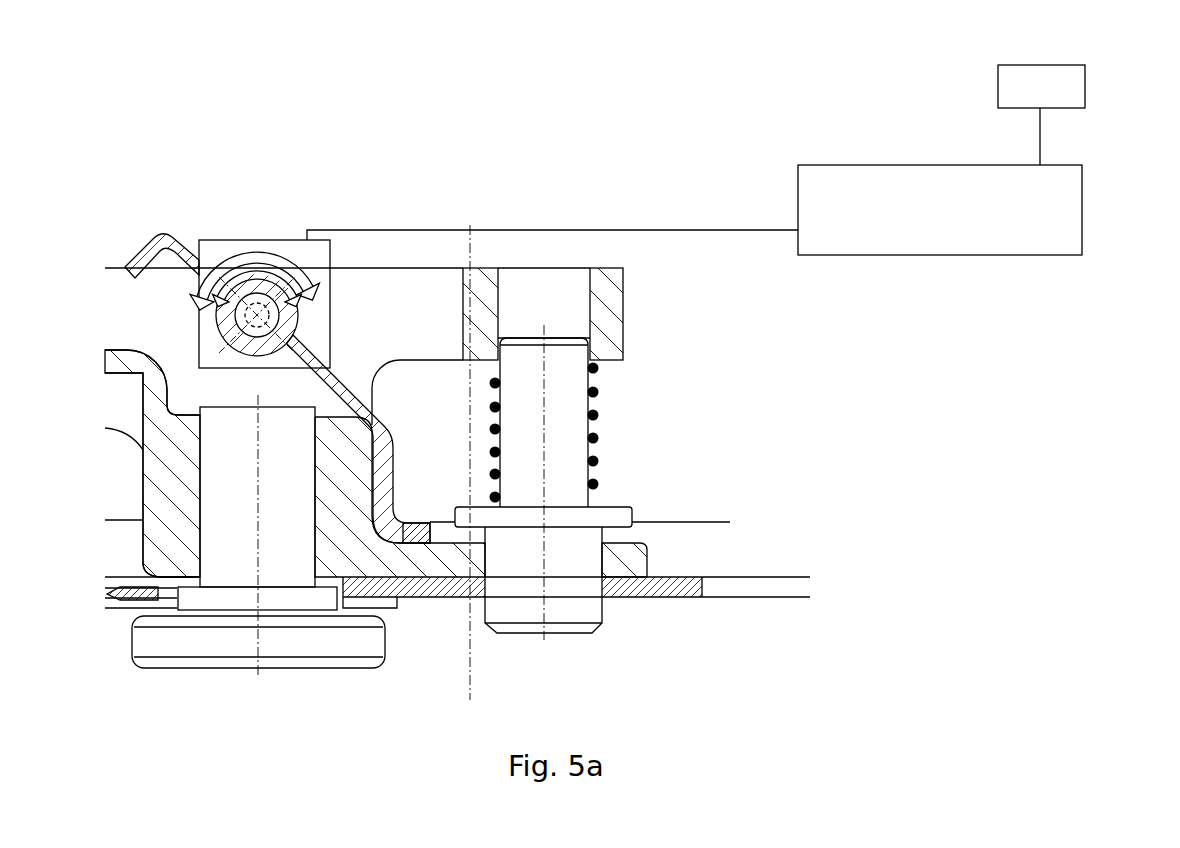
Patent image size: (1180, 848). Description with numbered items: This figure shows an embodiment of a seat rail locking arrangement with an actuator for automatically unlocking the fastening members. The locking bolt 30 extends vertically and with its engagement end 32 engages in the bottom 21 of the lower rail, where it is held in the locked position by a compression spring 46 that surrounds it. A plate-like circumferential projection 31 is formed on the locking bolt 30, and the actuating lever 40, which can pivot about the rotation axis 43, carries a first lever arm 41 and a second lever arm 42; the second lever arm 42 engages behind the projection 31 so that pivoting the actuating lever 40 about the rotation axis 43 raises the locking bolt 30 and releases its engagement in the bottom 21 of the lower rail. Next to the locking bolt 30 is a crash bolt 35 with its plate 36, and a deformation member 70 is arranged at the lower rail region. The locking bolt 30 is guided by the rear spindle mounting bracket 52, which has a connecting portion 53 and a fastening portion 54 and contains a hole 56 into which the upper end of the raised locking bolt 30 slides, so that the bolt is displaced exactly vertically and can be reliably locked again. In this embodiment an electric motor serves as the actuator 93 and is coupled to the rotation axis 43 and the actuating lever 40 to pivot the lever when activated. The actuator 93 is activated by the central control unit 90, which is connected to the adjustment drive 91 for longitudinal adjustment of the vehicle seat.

The bottom of lower rail 21 is at (680, 598).
The locking bolt 30 is at (563, 448).
The projection 31 is at (617, 517).
The engagement end of locking bolt 32 is at (563, 613).
The crash bolt 35 is at (290, 553).
The plate of crash bolt 36 is at (187, 638).
The actuating lever 40 is at (342, 390).
The first lever arm of actuating lever 41 is at (172, 242).
The second lever arm of actuating lever 42 is at (415, 537).
The rotation axis/pin 43 is at (263, 297).
The compression spring 46 is at (600, 397).
The rear spindle mounting bracket 52 is at (168, 480).
The connecting portion 53 is at (613, 310).
The fastening portion 54 is at (457, 567).
The hole 56 is at (545, 290).
The deformation member 70 is at (155, 594).
The central control unit 90 is at (1067, 200).
The adjustment drive for longitudinal adjustment of vehicle seat 91 is at (1053, 75).
The actuator 93 is at (318, 258).